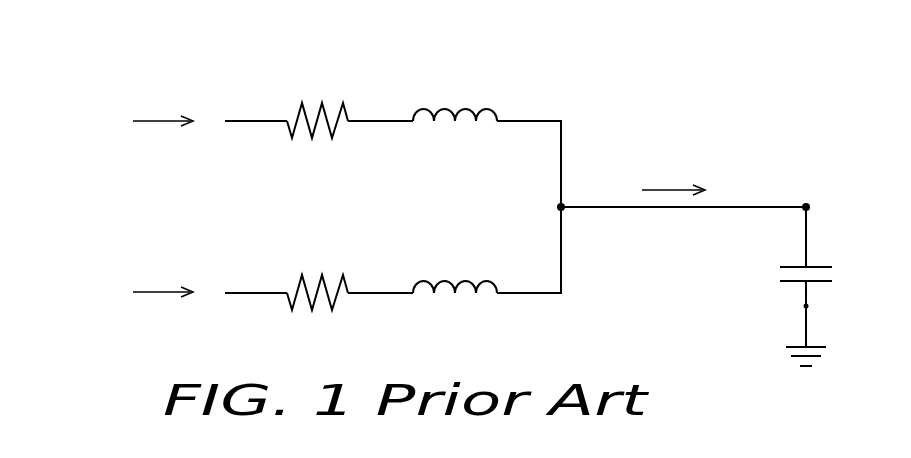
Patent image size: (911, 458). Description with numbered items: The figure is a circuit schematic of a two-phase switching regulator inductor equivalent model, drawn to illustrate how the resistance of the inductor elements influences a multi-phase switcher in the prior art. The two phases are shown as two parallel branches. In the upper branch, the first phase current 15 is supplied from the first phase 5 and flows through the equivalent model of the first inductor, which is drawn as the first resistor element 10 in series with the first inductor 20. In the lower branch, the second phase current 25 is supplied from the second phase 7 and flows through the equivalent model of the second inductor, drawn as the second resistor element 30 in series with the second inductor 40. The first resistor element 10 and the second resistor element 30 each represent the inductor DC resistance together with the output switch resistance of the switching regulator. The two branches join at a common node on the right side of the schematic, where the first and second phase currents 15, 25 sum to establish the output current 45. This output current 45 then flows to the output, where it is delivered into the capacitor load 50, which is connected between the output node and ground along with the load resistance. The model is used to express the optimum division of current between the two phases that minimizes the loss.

The Phase 1 5 is at (77, 118).
The Phase 2 7 is at (77, 288).
The resistor element R1 10 is at (338, 77).
The first phase current I1 15 is at (170, 126).
The inductor L1 20 is at (473, 73).
The second phase current I2 25 is at (170, 297).
The resistor element R2 30 is at (338, 249).
The inductor L2 40 is at (473, 245).
The output current I OUT 45 is at (668, 167).
The capacitor load C out 50 is at (774, 277).